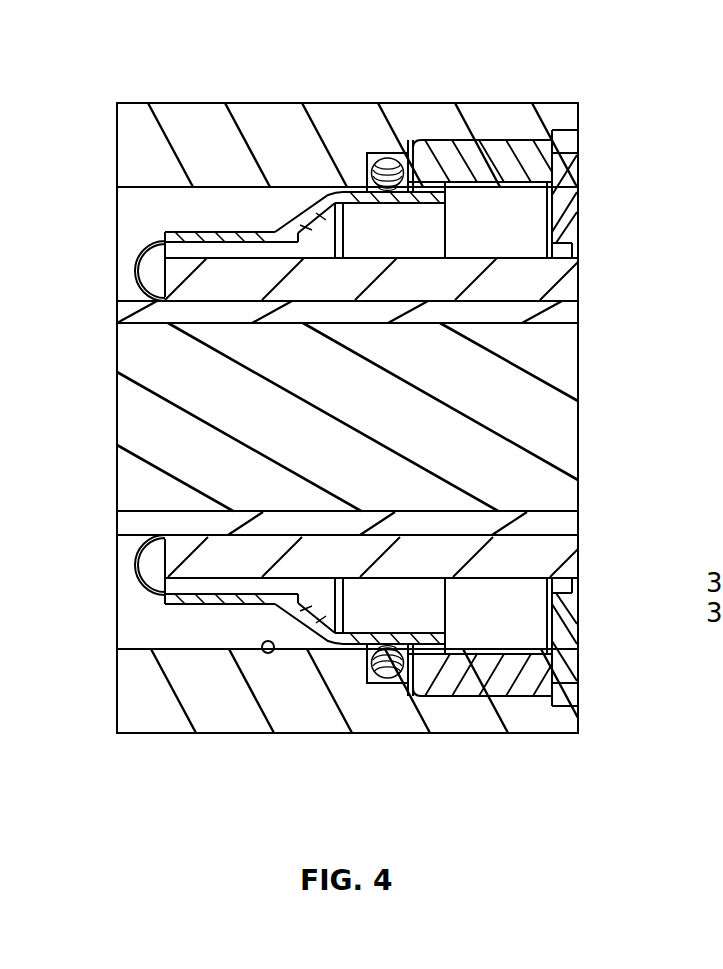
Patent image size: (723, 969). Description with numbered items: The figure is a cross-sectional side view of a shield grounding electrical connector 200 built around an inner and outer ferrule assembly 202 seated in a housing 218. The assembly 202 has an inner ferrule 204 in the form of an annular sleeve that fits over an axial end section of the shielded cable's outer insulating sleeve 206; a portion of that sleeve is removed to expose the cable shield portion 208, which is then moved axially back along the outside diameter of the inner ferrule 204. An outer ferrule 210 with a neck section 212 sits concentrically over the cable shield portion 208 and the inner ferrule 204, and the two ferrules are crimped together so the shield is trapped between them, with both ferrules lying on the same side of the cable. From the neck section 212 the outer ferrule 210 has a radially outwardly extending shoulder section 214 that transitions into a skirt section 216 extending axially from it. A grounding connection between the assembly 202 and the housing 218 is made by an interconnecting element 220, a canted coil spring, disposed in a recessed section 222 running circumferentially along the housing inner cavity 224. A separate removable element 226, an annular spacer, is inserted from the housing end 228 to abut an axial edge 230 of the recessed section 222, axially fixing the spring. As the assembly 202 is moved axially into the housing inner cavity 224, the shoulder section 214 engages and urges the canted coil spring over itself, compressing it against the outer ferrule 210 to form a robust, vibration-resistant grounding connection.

The shield grounding electrical connector 200 is at (612, 178).
The inner and outer ferrule assembly 202 is at (229, 619).
The inner ferrule 204 is at (177, 582).
The outer insulating sleeve 206 is at (543, 557).
The cable shield portion 208 is at (293, 243).
The outer ferrule 210 is at (305, 637).
The neck section 212 is at (205, 595).
The shoulder section 214 is at (292, 217).
The skirt section 216 is at (405, 187).
The housing 218 is at (192, 138).
The interconnecting element 220 is at (385, 670).
The recessed section 222 is at (386, 158).
The housing inner cavity 224 is at (268, 653).
The removable element 226 is at (460, 160).
The housing end 228 is at (579, 719).
The axial edge 230 is at (408, 690).